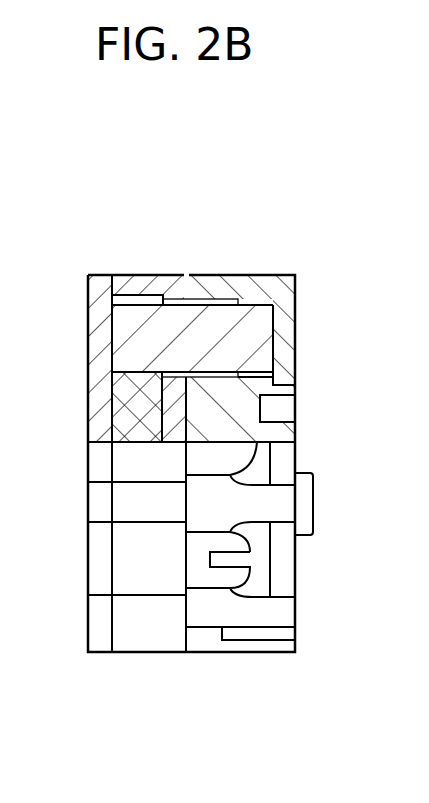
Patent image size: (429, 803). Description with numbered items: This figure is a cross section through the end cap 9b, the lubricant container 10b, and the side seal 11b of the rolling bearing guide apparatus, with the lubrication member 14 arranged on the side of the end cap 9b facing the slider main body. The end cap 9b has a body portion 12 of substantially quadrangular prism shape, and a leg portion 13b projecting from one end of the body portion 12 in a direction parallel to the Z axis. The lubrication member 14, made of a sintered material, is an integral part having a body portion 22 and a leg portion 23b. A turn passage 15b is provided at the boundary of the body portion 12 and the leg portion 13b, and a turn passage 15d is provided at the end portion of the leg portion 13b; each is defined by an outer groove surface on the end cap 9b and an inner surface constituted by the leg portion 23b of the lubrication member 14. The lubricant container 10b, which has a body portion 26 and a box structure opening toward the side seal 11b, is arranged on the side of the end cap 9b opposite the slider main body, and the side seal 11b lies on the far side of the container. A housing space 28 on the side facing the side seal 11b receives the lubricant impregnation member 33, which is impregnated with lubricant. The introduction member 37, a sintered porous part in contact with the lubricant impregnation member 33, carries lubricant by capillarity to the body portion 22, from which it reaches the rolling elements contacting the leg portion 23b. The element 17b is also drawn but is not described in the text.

The lubrication member 14 is at (305, 326).
The body portion 12 is at (260, 290).
The body portion 22 is at (282, 350).
The body portion 26 is at (168, 287).
The introduction member 37 is at (133, 325).
The housing space 28 is at (130, 415).
The lubricant impregnation member 33 is at (175, 400).
The leg portion 23b is at (282, 457).
The turn passage 15b is at (265, 468).
The turn passage 15d is at (263, 578).
The tab 17b is at (307, 508).
The leg portion 13b is at (268, 615).
The side seal 11b is at (92, 668).
The lubricant container 10b is at (162, 668).
The end cap 9b is at (227, 668).